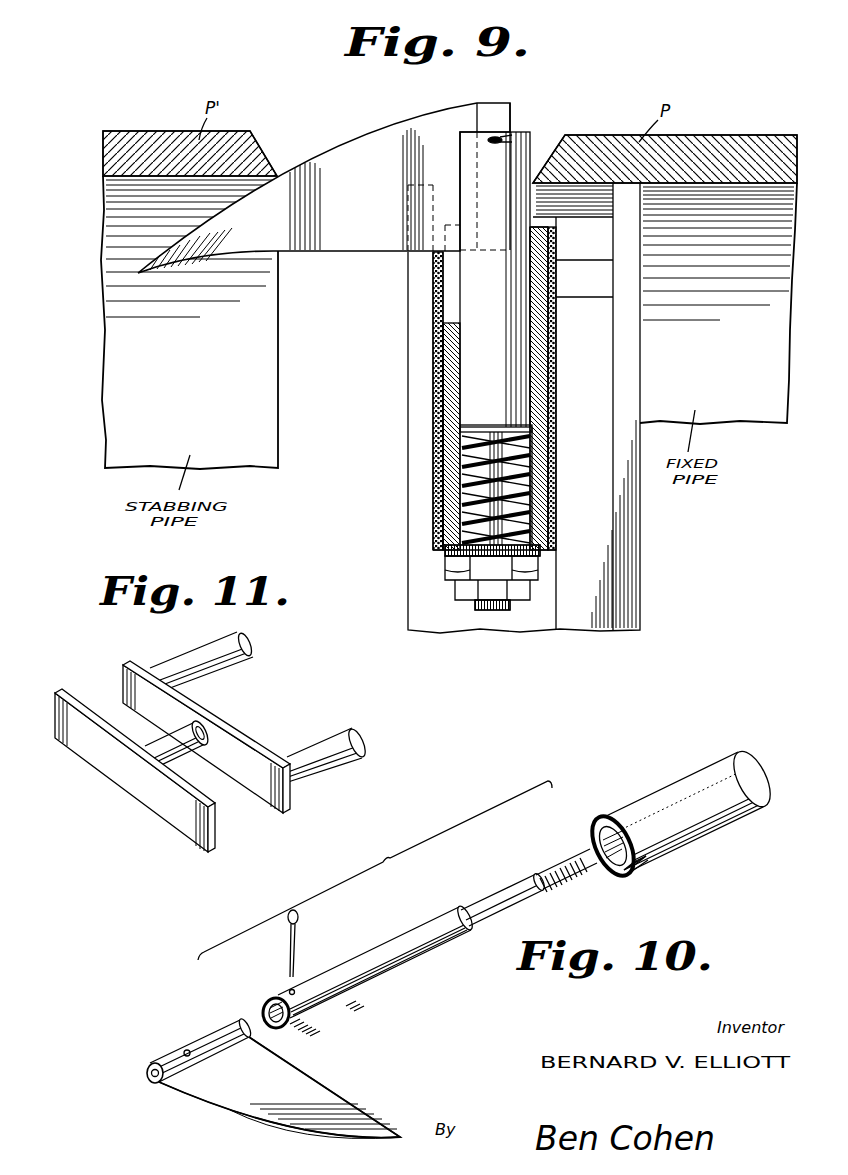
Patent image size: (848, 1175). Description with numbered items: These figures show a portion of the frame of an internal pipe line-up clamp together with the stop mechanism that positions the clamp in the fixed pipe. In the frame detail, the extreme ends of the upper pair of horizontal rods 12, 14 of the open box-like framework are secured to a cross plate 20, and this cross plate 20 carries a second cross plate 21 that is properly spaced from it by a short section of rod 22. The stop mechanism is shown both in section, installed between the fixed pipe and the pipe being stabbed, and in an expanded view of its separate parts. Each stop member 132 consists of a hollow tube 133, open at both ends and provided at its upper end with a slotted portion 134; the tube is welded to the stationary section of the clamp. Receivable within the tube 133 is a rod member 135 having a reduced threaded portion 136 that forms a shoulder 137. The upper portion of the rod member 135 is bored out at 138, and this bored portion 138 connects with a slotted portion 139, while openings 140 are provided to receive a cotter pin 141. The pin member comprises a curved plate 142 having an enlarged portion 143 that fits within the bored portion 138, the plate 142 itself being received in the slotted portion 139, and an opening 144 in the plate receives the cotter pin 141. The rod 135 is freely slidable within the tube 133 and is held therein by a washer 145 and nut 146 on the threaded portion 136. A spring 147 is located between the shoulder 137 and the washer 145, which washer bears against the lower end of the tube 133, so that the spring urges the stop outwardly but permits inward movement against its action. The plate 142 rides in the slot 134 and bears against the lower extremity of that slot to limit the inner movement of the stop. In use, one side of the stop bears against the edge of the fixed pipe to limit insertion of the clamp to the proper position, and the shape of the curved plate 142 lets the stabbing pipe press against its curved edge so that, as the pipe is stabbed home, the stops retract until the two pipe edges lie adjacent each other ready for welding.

In FIG. 11, the horizontal rod 12 is at (312, 746).
In FIG. 11, the horizontal rod 14 is at (228, 658).
In FIG. 11, the cross plate 20 is at (240, 740).
In FIG. 11, the second cross plate 21 is at (150, 806).
In FIG. 11, the short section of rod 22 is at (178, 748).
In FIG. 9, the stop member 132 is at (546, 134).
In FIG. 9, the hollow tube 133 is at (540, 242).
In FIG. 10, the hollow tube 133 is at (665, 788).
In FIG. 9, the slotted portion 134 is at (450, 295).
In FIG. 10, the slotted portion 134 is at (668, 852).
In FIG. 9, the rod member 135 is at (503, 333).
In FIG. 10, the rod member 135 is at (398, 940).
In FIG. 9, the reduced threaded portion 136 is at (515, 485).
In FIG. 10, the reduced threaded portion 136 is at (526, 875).
In FIG. 9, the shoulder 137 is at (526, 428).
In FIG. 10, the shoulder 137 is at (462, 905).
In FIG. 10, the bored portion 138 is at (268, 1008).
In FIG. 10, the slotted portion 139 is at (320, 1013).
In FIG. 10, the openings 140 is at (294, 989).
In FIG. 9, the cotter pin 141 is at (505, 137).
In FIG. 10, the cotter pin 141 is at (300, 923).
In FIG. 9, the curved plate 142 is at (338, 228).
In FIG. 10, the curved plate 142 is at (238, 1087).
In FIG. 9, the enlarged portion 143 is at (507, 130).
In FIG. 10, the enlarged portion 143 is at (157, 1076).
In FIG. 10, the opening 144 is at (187, 1050).
In FIG. 9, the washer 145 is at (540, 555).
In FIG. 9, the nut 146 is at (540, 580).
In FIG. 9, the spring 147 is at (530, 522).